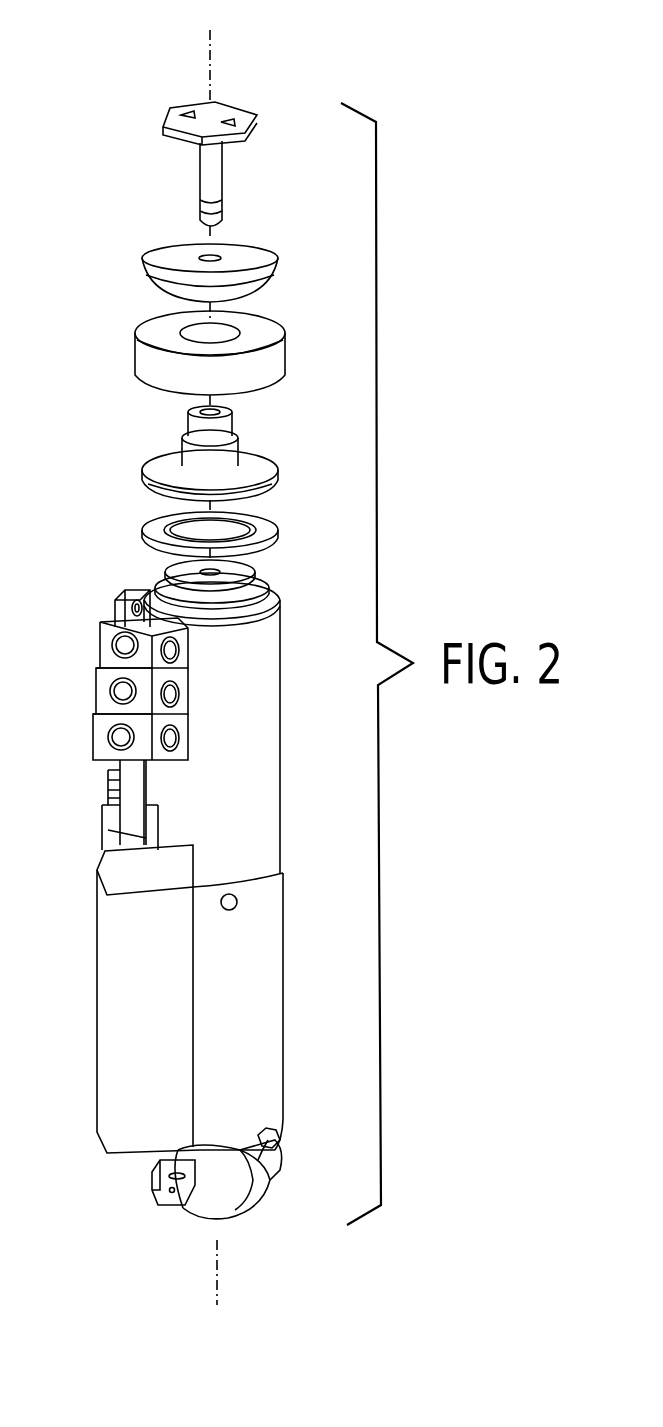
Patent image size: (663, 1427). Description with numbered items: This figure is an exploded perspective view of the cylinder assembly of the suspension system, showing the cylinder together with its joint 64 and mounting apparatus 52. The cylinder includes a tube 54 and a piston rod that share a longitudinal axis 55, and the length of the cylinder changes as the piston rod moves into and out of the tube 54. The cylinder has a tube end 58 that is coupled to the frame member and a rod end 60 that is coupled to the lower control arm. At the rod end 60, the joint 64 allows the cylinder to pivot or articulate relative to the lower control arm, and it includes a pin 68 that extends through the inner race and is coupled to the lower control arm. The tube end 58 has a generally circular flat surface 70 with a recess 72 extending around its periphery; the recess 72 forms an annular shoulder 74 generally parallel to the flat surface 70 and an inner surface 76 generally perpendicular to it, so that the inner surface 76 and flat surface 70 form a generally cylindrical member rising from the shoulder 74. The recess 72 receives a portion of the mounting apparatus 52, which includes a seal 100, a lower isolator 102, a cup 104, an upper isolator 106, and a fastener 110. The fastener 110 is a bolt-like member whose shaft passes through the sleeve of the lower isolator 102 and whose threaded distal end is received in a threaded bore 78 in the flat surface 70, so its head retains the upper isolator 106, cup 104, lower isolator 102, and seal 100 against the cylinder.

The mounting apparatus 52 is at (214, 145).
The tube 54 is at (233, 763).
The longitudinal axis 55 is at (210, 65).
The tube end 58 is at (292, 598).
The rod end 60 is at (266, 1212).
The joint 64 is at (187, 1197).
The pin 68 is at (183, 1197).
The flat surface 70 is at (247, 572).
The recess 72 is at (157, 582).
The shoulder 74 is at (275, 583).
The inner surface 76 is at (135, 608).
The threaded bore 78 is at (217, 582).
The seal 100 is at (152, 527).
The lower isolator 102 is at (168, 463).
The cup 104 is at (147, 363).
The upper isolator 106 is at (158, 257).
The fastener 110 is at (238, 108).